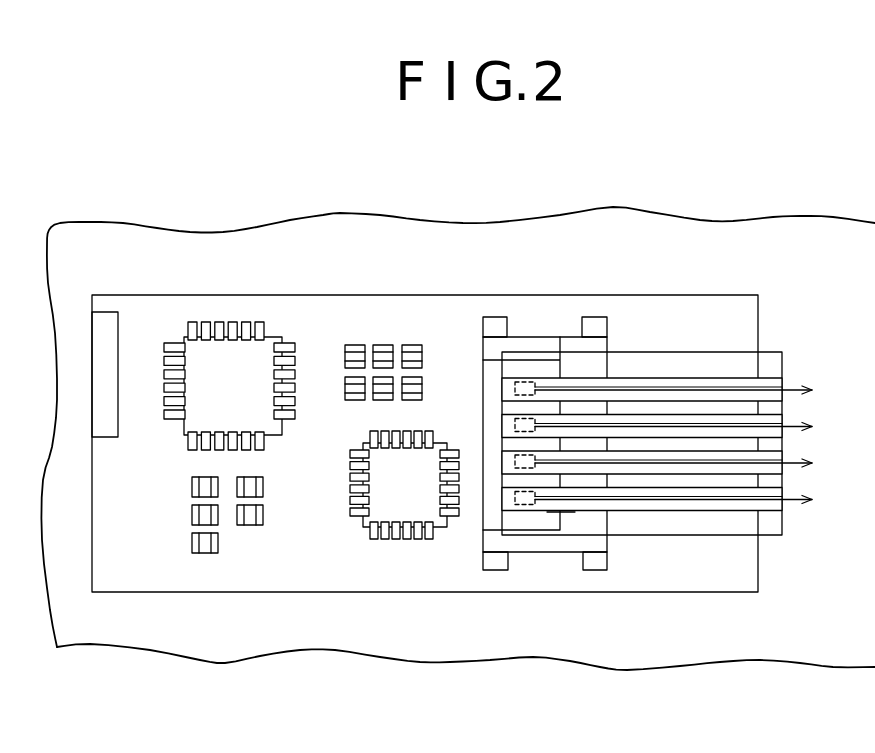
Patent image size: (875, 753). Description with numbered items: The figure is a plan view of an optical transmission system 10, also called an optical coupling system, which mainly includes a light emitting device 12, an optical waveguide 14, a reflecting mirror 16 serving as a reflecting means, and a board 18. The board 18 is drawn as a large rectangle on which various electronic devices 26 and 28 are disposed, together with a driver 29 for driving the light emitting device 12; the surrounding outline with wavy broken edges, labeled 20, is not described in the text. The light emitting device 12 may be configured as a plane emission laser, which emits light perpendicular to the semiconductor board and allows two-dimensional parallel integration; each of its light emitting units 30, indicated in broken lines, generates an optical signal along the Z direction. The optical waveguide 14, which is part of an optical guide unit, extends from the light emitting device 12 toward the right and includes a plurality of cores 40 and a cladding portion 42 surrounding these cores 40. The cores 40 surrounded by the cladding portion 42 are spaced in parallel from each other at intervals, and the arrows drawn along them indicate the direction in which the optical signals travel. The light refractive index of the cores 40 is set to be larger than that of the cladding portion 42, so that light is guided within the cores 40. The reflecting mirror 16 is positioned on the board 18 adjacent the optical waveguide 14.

The optical transmission system 10 is at (480, 208).
The light emitting device 12 is at (573, 342).
The optical waveguide 14 is at (657, 538).
The reflecting mirror 16 is at (528, 520).
The board 18 is at (317, 322).
The housing 20 is at (387, 658).
The electronic device 26 is at (193, 516).
The electronic device 28 is at (356, 387).
The driver 29 is at (182, 430).
The light emitting unit 30 is at (515, 498).
The core 40 is at (767, 383).
The cladding portion 42 is at (733, 367).